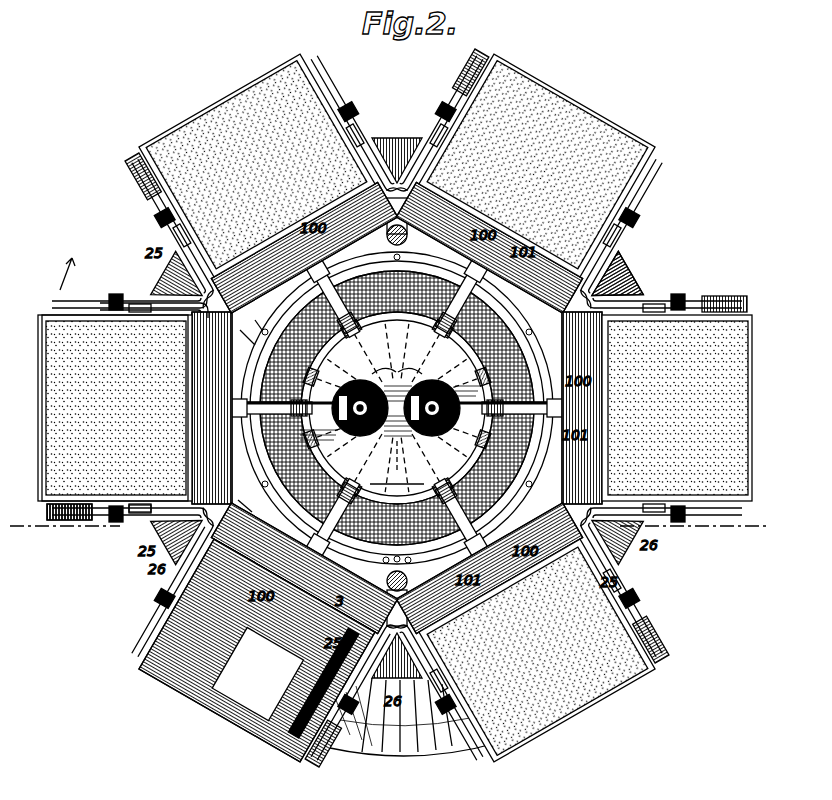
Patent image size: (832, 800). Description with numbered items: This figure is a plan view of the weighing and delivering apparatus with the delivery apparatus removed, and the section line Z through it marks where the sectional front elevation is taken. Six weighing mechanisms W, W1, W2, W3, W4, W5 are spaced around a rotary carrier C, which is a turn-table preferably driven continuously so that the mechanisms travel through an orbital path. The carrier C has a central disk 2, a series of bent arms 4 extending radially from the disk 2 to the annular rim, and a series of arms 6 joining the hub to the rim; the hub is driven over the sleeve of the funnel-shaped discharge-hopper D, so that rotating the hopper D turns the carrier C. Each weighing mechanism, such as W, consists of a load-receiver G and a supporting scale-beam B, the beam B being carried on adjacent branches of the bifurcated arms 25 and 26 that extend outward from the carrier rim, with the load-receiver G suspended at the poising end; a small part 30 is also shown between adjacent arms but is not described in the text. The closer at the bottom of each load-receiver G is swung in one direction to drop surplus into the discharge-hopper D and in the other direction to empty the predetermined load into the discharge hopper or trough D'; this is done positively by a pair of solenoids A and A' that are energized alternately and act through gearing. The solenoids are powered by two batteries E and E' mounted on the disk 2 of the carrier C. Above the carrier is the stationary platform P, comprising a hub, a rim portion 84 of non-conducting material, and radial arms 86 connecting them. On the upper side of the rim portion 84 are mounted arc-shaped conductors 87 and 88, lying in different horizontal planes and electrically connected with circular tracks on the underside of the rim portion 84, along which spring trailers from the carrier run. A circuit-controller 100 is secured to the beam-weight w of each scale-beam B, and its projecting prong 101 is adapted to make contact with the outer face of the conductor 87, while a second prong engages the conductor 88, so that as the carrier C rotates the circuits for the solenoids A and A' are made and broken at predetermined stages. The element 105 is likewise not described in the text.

The disk 2 is at (394, 460).
The bent arms 4 is at (262, 330).
The arms 6 is at (394, 409).
The bifurcated arm 25 is at (400, 140).
The bifurcated arm 26 is at (165, 278).
The pivot pin 30 is at (386, 238).
The rim portion 84 is at (397, 492).
The radial arms 86 is at (412, 368).
The arc-shaped conductor 87 is at (488, 517).
The arc-shaped conductor 88 is at (342, 560).
The circuit-controller 100 is at (228, 408).
The prong or circuit-closer 101 is at (322, 282).
The roller 105 is at (209, 406).
The weighing mechanism W is at (119, 408).
The weighing mechanism W1 is at (266, 183).
The weighing mechanism W2 is at (526, 183).
The weighing mechanism W3 is at (674, 408).
The weighing mechanism W4 is at (526, 633).
The weighing mechanism W5 is at (266, 633).
The load-receiver G is at (40, 366).
The scale-beam B is at (135, 302).
The solenoid A is at (391, 332).
The solenoid A' is at (396, 413).
The battery E is at (357, 415).
The battery E' is at (433, 399).
The discharge-hopper D is at (626, 276).
The discharge hopper or trough D' is at (415, 732).
The stationary platform P is at (248, 332).
The carrier C is at (245, 500).
The beam-weight w is at (390, 427).
The section line Z is at (394, 525).